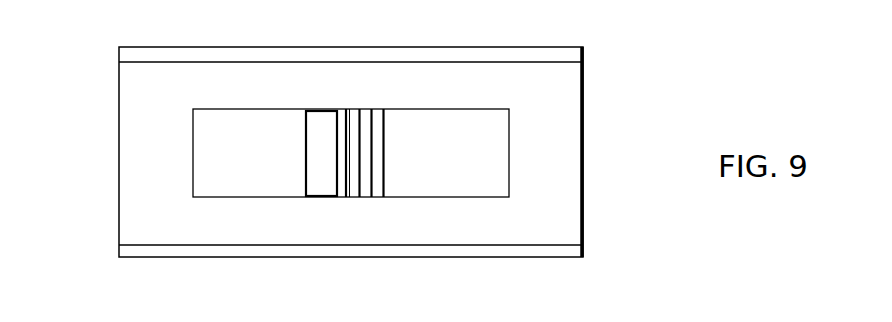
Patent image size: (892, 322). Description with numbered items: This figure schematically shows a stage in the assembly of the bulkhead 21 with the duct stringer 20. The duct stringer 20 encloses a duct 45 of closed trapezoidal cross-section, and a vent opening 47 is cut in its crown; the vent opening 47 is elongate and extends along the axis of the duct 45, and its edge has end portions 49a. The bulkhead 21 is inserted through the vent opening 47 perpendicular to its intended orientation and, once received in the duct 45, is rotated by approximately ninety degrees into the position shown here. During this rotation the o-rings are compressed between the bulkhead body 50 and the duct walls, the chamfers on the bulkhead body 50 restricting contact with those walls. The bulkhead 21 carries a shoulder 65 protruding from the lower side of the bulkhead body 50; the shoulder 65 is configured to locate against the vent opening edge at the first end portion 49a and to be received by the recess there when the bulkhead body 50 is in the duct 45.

The duct stringer 20 is at (563, 177).
The end portion of the vent opening edge 49a is at (509, 135).
The duct 45 is at (248, 188).
The vent opening 47 is at (417, 180).
The shoulder 65 is at (325, 120).
The bulkhead 21 is at (355, 110).
The bulkhead body 50 is at (353, 190).